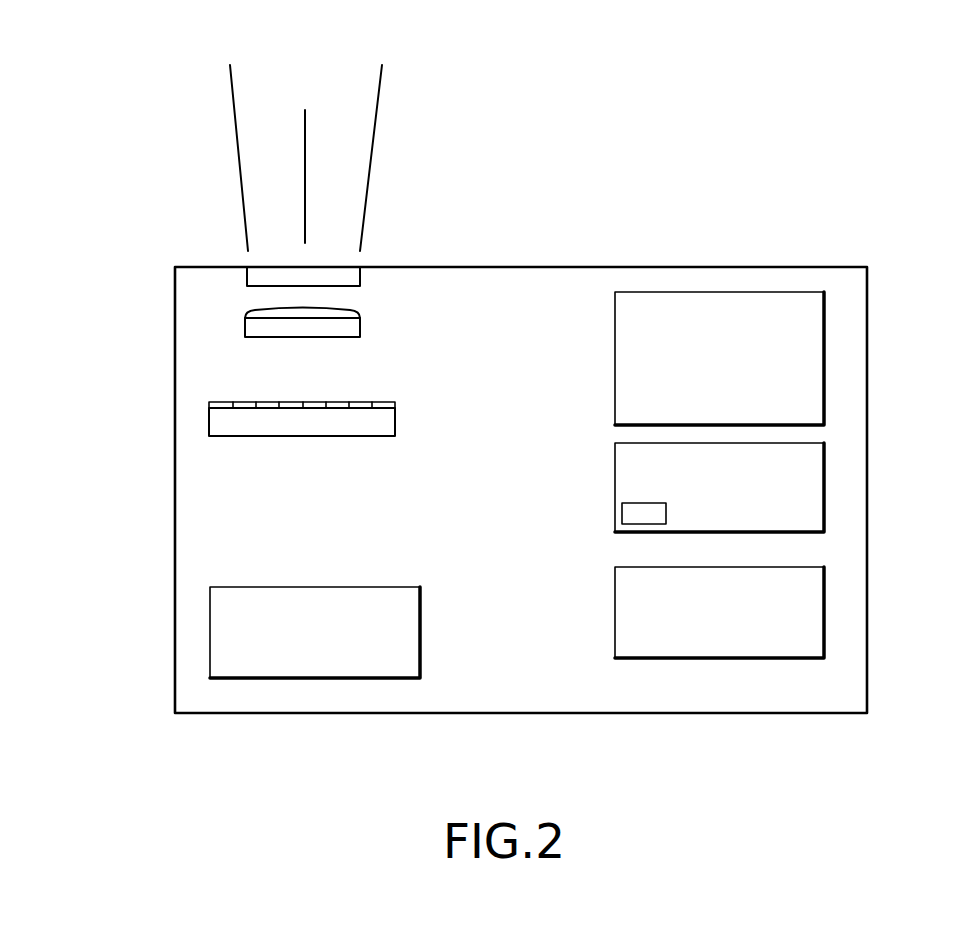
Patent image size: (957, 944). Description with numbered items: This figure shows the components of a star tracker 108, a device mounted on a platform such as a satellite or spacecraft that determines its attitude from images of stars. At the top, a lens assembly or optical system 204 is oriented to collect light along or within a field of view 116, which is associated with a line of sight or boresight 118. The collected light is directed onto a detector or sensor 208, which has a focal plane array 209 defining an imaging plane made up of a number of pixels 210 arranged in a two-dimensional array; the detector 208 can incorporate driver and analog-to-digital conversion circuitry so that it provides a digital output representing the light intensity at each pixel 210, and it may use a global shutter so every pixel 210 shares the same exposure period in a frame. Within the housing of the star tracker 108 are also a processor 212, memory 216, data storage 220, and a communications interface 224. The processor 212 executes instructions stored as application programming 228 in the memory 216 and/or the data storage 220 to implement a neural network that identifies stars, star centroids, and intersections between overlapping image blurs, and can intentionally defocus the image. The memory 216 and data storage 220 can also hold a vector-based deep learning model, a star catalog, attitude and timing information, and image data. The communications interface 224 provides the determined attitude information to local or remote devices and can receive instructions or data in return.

The star tracker 108 is at (712, 715).
The field of view 116 is at (372, 163).
The boresight 118 is at (307, 130).
The lens assembly or optical system 204 is at (245, 323).
The detector or sensor 208 is at (209, 423).
The focal plane array 209 is at (394, 405).
The pixels 210 is at (222, 402).
The processor 212 is at (826, 352).
The memory 216 is at (826, 480).
The data storage 220 is at (826, 598).
The communications interface 224 is at (303, 678).
The application programming 228 is at (625, 517).